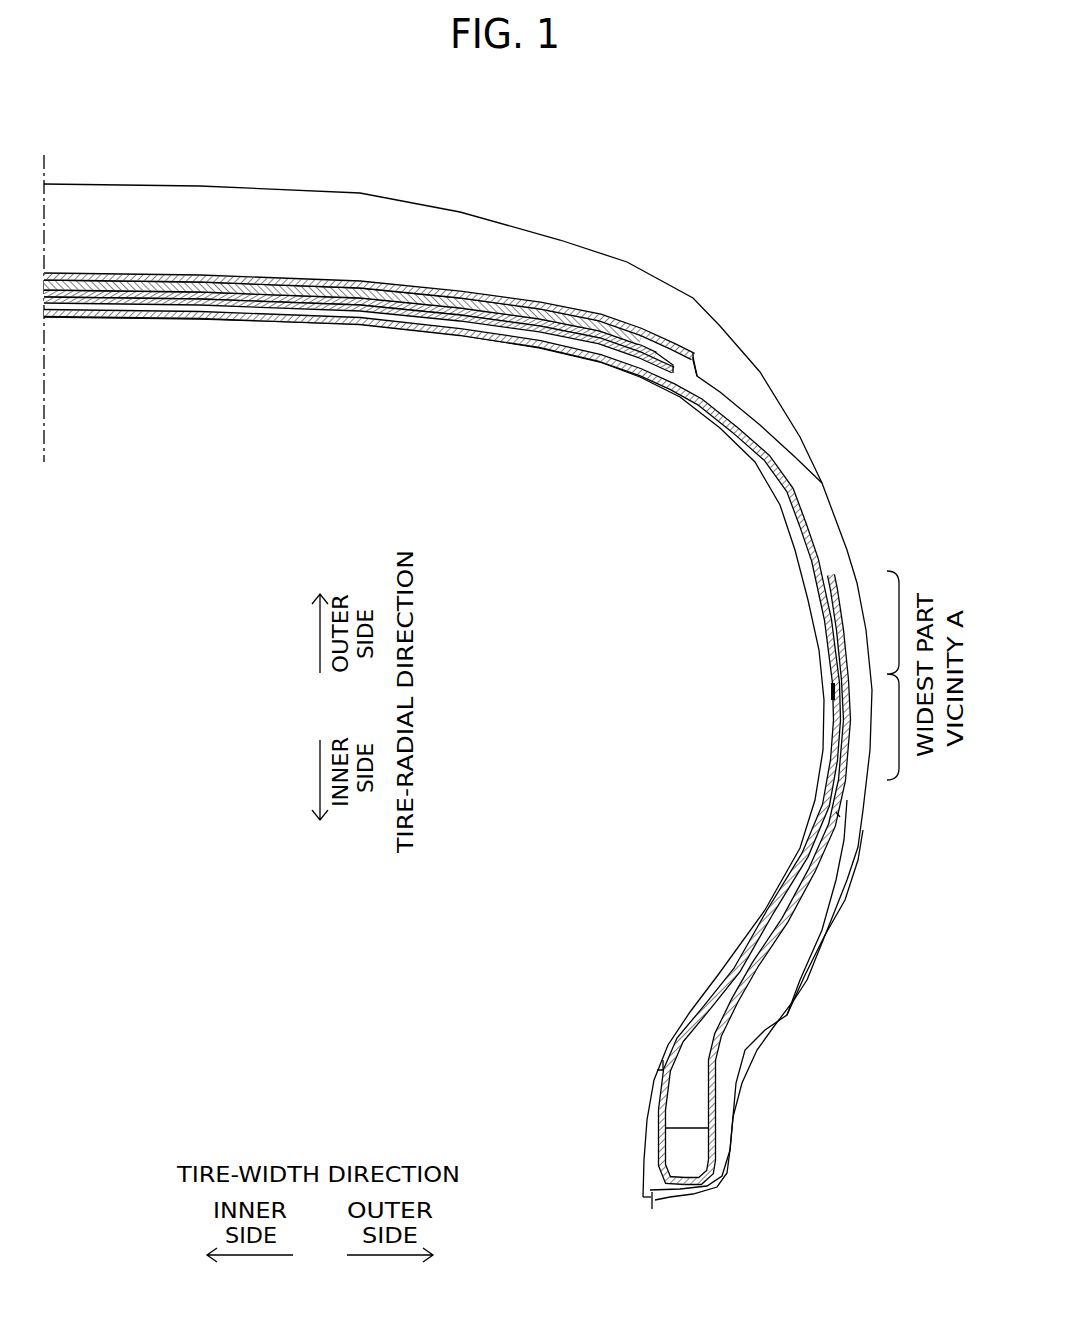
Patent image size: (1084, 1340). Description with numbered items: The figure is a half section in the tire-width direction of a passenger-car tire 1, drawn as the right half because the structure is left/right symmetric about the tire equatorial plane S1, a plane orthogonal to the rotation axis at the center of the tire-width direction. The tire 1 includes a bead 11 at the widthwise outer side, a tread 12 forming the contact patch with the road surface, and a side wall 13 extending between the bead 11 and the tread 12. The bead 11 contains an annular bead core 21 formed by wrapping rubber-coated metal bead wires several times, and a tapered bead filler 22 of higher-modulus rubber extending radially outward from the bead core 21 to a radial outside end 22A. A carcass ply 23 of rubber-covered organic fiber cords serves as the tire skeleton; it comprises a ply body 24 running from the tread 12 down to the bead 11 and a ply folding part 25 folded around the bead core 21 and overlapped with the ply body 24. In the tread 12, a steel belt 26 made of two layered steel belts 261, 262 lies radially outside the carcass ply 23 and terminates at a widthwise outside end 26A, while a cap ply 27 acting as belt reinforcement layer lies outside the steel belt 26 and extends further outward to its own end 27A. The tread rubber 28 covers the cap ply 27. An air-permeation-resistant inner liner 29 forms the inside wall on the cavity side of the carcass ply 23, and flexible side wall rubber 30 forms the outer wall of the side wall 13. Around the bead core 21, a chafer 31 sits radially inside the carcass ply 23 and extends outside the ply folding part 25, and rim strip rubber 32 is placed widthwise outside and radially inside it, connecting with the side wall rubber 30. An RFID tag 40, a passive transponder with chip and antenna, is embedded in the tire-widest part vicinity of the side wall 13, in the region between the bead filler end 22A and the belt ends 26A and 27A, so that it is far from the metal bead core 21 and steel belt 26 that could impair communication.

The tire 1 is at (880, 150).
The bead 11 is at (810, 1103).
The tread 12 is at (378, 152).
The side wall 13 is at (898, 524).
The bead core 21 is at (683, 1150).
The bead filler 22 is at (700, 1042).
The tire-radial direction outside end of the bead filler 22A is at (840, 817).
The carcass ply 23 is at (480, 747).
The ply body 24 is at (810, 551).
The ply folding part 25 is at (827, 858).
The steel belt 26 is at (408, 354).
The tire-width direction outside end of the steel belt 26A is at (673, 365).
The cap ply 27 is at (582, 307).
The tire-width direction outside end of the cap ply 27A is at (693, 373).
The tread rubber 28 is at (487, 223).
The inner liner 29 is at (800, 851).
The side wall rubber 30 is at (827, 898).
The chafer 31 is at (650, 1200).
The rim strip rubber 32 is at (752, 1038).
The RFID tag 40 is at (831, 694).
The steel belt 261 is at (228, 305).
The steel belt 262 is at (330, 305).
The tire equatorial plane S1 is at (44, 412).